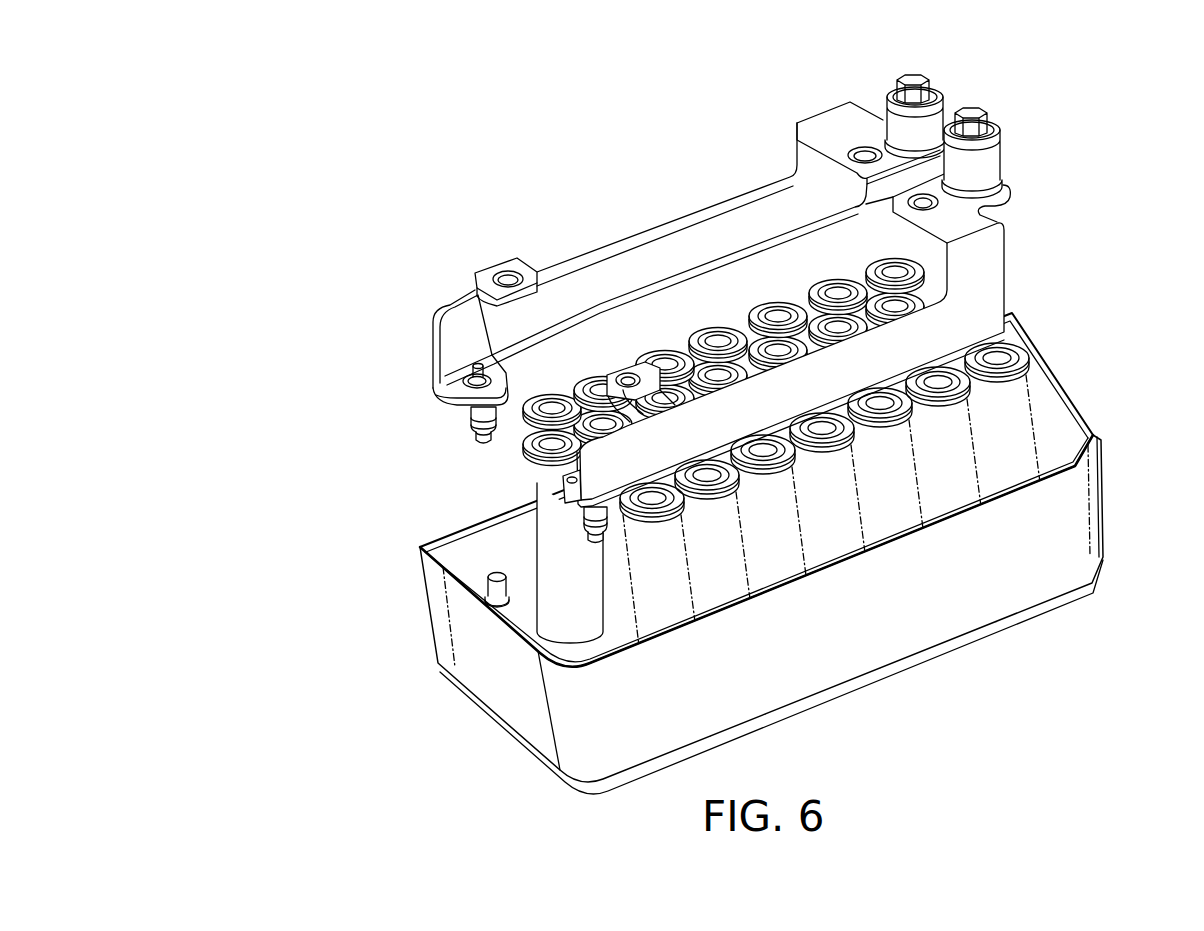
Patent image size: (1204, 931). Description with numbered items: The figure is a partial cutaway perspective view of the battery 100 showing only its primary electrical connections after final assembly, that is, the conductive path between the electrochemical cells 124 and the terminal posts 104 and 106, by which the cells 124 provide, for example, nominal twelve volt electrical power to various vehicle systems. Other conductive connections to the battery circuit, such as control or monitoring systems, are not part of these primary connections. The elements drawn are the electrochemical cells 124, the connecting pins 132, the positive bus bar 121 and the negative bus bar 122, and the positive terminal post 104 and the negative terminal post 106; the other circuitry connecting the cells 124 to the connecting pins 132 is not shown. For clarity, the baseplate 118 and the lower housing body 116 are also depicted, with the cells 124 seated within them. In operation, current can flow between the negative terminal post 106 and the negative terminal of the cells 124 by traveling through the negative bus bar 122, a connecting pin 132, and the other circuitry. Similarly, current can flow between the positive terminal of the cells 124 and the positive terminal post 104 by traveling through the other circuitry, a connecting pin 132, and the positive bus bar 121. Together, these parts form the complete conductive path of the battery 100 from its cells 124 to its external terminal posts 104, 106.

The battery 100 is at (373, 90).
The positive terminal post 104 is at (988, 172).
The negative terminal post 106 is at (928, 125).
The lower housing body 116 is at (500, 647).
The baseplate 118 is at (497, 723).
The positive bus bar 121 is at (975, 305).
The negative bus bar 122 is at (715, 233).
The electrochemical cells 124 is at (990, 432).
The connecting pins 132 is at (593, 492).